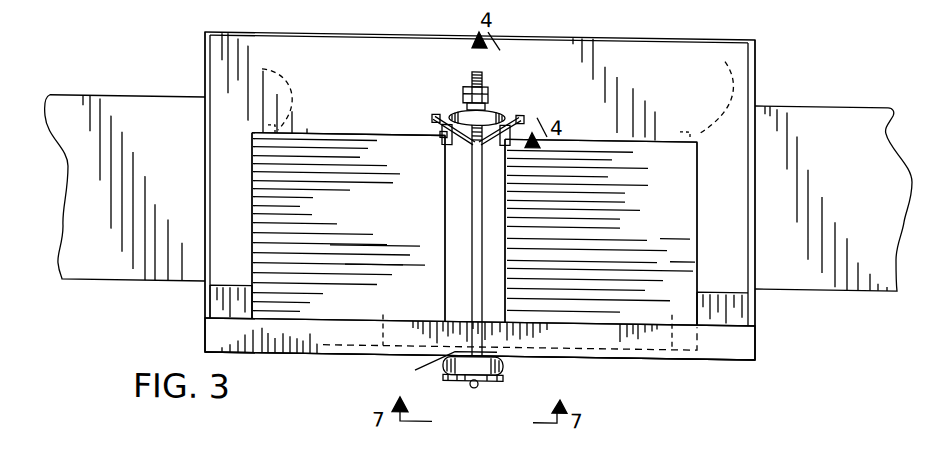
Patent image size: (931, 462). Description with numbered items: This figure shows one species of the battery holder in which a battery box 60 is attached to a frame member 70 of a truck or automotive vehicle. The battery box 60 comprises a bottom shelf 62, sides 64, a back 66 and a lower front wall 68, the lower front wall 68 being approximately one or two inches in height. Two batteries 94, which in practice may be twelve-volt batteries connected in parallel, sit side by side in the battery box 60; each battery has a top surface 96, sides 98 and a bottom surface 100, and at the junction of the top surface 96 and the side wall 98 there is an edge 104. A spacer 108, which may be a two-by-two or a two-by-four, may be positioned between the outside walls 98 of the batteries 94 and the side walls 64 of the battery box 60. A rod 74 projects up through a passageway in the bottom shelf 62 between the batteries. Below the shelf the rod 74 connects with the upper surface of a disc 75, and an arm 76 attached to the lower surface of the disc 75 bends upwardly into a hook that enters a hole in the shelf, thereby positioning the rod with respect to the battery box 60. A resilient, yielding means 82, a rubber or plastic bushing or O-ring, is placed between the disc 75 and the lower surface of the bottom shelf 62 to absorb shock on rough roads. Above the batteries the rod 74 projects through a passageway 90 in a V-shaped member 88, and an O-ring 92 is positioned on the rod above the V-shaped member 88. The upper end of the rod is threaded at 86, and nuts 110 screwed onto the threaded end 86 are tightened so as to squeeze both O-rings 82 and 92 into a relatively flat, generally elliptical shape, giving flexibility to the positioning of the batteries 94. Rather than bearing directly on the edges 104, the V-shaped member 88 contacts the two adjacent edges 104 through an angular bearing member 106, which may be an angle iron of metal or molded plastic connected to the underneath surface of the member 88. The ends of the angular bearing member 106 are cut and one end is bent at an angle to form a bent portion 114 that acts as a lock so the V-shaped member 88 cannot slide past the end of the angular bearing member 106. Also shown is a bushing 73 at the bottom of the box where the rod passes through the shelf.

The battery box 60 is at (203, 319).
The bottom shelf 62 is at (320, 351).
The sides 64 is at (205, 183).
The back 66 is at (325, 72).
The lower front wall 68 is at (728, 347).
The frame member 70 is at (163, 97).
The bushing 73 is at (438, 369).
The rod 74 is at (472, 222).
The disc 75 is at (500, 371).
The arm 76 is at (470, 382).
The resilient yielding means 82 is at (503, 359).
The threaded end 86 is at (472, 70).
The V-shaped member 88 is at (450, 114).
The passageway 90 is at (476, 141).
The O-ring 92 is at (506, 113).
The battery 94 is at (381, 222).
The top surface 96 is at (363, 130).
The sides 98 is at (252, 211).
The bottom surface 100 is at (510, 319).
The edge 104 is at (446, 140).
The angular bearing member 106 is at (433, 115).
The spacer 108 is at (248, 261).
The nuts 110 is at (465, 90).
The bent portion 114 is at (440, 134).